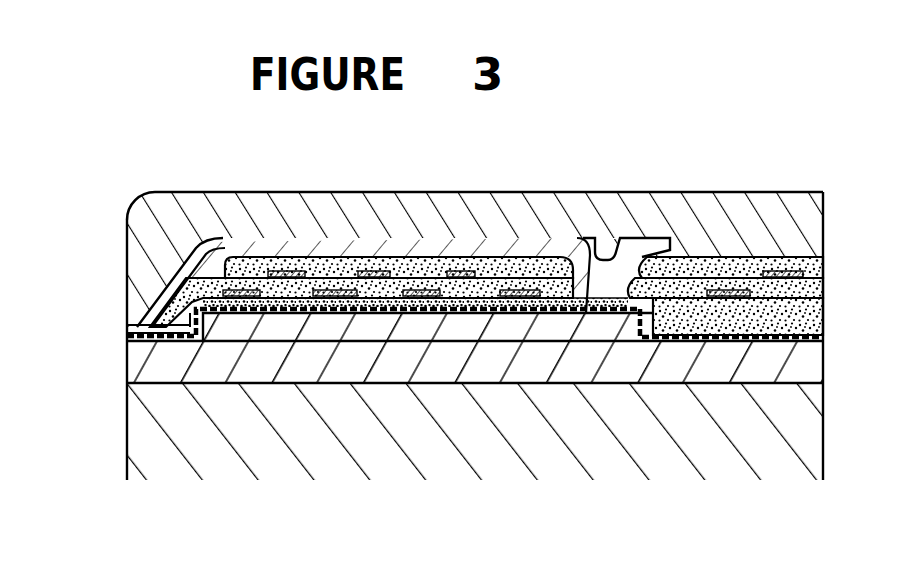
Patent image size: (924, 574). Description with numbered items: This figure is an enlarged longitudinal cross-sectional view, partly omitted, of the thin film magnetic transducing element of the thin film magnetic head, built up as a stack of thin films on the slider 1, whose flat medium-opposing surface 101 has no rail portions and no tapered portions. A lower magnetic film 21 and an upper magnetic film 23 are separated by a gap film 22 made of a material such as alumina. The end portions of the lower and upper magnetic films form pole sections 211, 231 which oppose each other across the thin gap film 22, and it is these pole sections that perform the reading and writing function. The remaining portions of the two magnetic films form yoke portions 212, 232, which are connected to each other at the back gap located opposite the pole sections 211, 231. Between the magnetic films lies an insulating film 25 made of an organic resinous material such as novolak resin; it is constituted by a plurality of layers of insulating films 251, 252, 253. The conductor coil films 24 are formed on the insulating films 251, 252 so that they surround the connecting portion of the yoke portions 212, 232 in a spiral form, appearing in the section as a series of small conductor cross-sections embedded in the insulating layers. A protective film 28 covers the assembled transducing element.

The slider 1 is at (797, 428).
The medium-opposing surface 101 is at (114, 411).
The lower magnetic film 21 is at (409, 323).
The pole section 211 is at (128, 352).
The yoke portion 212 is at (600, 322).
The gap film 22 is at (148, 312).
The upper magnetic film 23 is at (372, 243).
The pole section 231 is at (130, 320).
The yoke portion 232 is at (603, 272).
The conductor coil films 24 is at (488, 298).
The insulating film 25 is at (840, 266).
The insulating film 251 is at (316, 312).
The insulating film 252 is at (229, 257).
The insulating film 253 is at (300, 258).
The protective film 28 is at (456, 266).